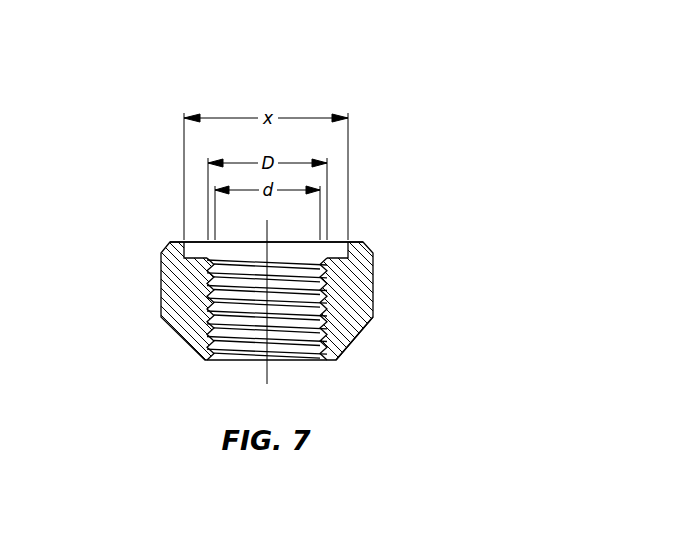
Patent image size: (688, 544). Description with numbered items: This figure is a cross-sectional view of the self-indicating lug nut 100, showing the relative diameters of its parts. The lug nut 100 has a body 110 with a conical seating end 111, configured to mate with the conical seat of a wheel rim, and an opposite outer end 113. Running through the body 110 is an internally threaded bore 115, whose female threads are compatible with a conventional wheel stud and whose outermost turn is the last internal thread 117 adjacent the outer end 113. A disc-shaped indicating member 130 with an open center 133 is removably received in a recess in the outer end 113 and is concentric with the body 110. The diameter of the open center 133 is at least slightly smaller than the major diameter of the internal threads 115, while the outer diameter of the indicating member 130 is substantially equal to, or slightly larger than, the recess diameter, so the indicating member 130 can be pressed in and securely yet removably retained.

The self-indicating lug nut 100 is at (429, 95).
The body 110 is at (363, 292).
The seating end 111 is at (342, 348).
The outer end 113 is at (182, 241).
The internally threaded bore 115 is at (240, 342).
The last internal thread 117 is at (206, 250).
The indicating member 130 is at (350, 241).
The open center 133 is at (283, 247).